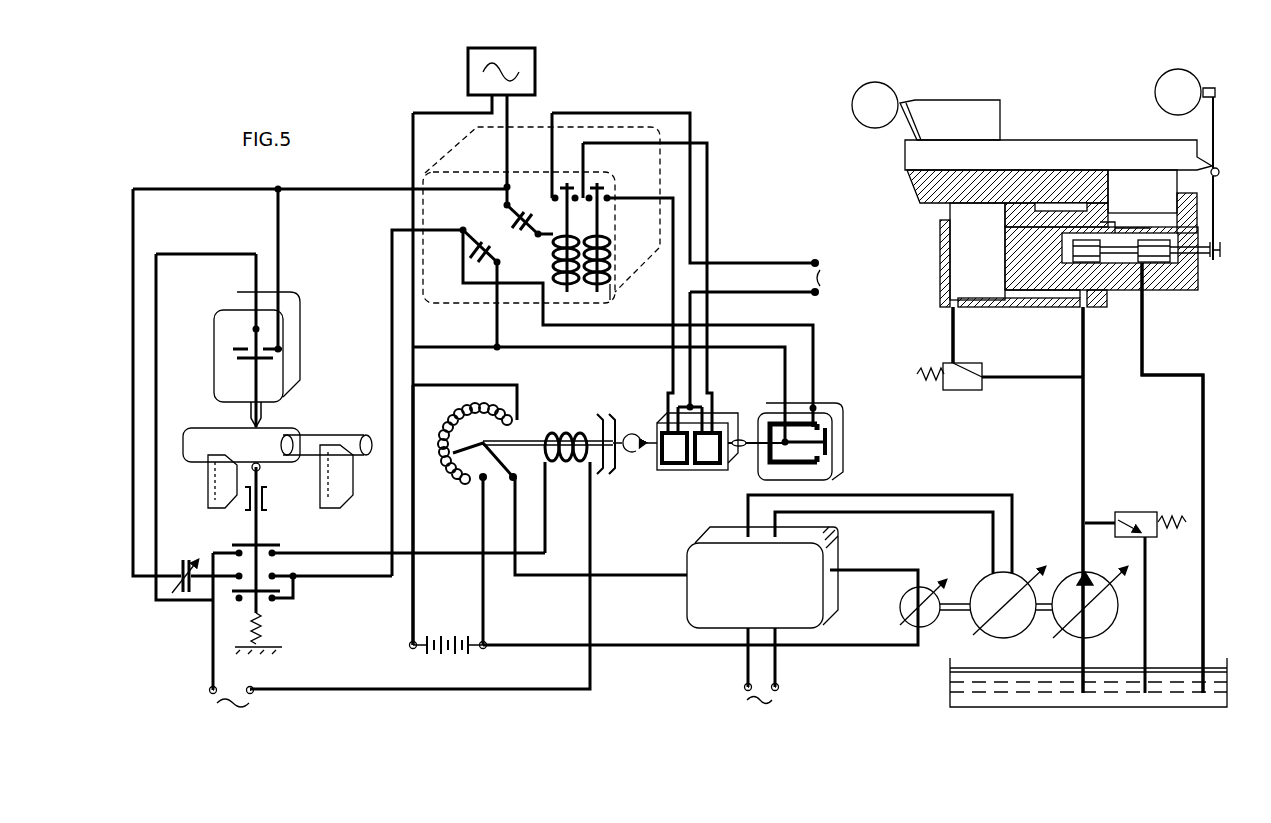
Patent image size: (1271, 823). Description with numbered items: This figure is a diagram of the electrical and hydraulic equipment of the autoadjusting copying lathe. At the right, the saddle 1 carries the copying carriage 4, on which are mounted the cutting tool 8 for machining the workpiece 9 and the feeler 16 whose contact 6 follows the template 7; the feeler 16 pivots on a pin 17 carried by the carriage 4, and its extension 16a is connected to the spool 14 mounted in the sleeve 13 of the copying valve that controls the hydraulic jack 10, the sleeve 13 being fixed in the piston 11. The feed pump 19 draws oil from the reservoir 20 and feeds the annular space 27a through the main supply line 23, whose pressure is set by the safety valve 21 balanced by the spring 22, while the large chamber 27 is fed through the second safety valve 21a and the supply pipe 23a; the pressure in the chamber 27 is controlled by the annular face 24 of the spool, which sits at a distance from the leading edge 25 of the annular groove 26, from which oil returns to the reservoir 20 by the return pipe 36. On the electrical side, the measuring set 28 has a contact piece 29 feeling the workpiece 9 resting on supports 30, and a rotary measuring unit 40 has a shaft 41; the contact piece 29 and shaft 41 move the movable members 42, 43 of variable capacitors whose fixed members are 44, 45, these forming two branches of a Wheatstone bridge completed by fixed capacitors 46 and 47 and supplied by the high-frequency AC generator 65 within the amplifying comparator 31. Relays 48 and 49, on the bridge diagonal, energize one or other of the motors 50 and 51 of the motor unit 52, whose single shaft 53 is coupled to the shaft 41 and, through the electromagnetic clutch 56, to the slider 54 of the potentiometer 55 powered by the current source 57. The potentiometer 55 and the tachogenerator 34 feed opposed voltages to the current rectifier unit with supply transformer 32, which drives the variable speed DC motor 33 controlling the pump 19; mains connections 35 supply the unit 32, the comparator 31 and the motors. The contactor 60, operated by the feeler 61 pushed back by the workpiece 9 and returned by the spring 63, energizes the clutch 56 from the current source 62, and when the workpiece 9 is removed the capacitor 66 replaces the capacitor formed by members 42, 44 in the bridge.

The saddle 1 is at (917, 195).
The copying carriage 4 is at (1055, 153).
The contact 6 is at (1205, 108).
The template 7 is at (1162, 110).
The cutting tool 8 is at (975, 110).
The workpiece 9 is at (852, 126).
The hydraulic jack 10 is at (1018, 310).
The piston 11 is at (1010, 270).
The sleeve 13 is at (1152, 232).
The spool 14 is at (1178, 272).
The feeler 16 is at (1216, 150).
The extension of the feeler 16a is at (1232, 234).
The pin 17 is at (1219, 174).
The feed pump 19 is at (1095, 625).
The oil reservoir 20 is at (1020, 680).
The safety valve 21 is at (1140, 515).
The second safety valve 21a is at (962, 393).
The spring 22 is at (1173, 507).
The main supply line 23 is at (1087, 360).
The supply pipe 23a is at (952, 333).
The annular face 24 is at (1150, 265).
The leading edge 25 is at (1132, 275).
The annular groove 26 is at (1132, 225).
The large chamber 27 is at (972, 255).
The annular space 27a is at (1061, 308).
The measuring set 28 is at (300, 320).
The contact piece 29 is at (264, 416).
The supports 30 is at (335, 497).
The amplifying comparator 31 is at (517, 140).
The current rectifier unit with supply transformer 32 is at (762, 577).
The variable speed DC motor 33 is at (993, 583).
The tachogenerator 34 is at (900, 612).
The line 35 is at (801, 486).
The return pipe 36 is at (1203, 422).
The measuring unit 40 is at (830, 405).
The shaft 41 is at (745, 435).
The movable member 42 is at (252, 358).
The movable member 43 is at (817, 460).
The fixed member 44 is at (232, 347).
The fixed member 45 is at (828, 440).
The fixed capacitor 46 is at (468, 255).
The fixed capacitor 47 is at (513, 220).
The relay 48 is at (553, 262).
The relay 49 is at (610, 258).
The motor 50 is at (678, 470).
The motor 51 is at (706, 470).
The motor unit 52 is at (728, 410).
The single shaft 53 is at (644, 452).
The slider 54 is at (460, 450).
The potentiometer 55 is at (462, 418).
The electromagnetic clutch 56 is at (618, 418).
The current source 57 is at (448, 630).
The contactor 60 is at (259, 530).
The feeler 61 is at (260, 470).
The current source 62 is at (228, 688).
The spring 63 is at (262, 630).
The high-frequency AC generator 65 is at (536, 80).
The capacitor 66 is at (183, 558).